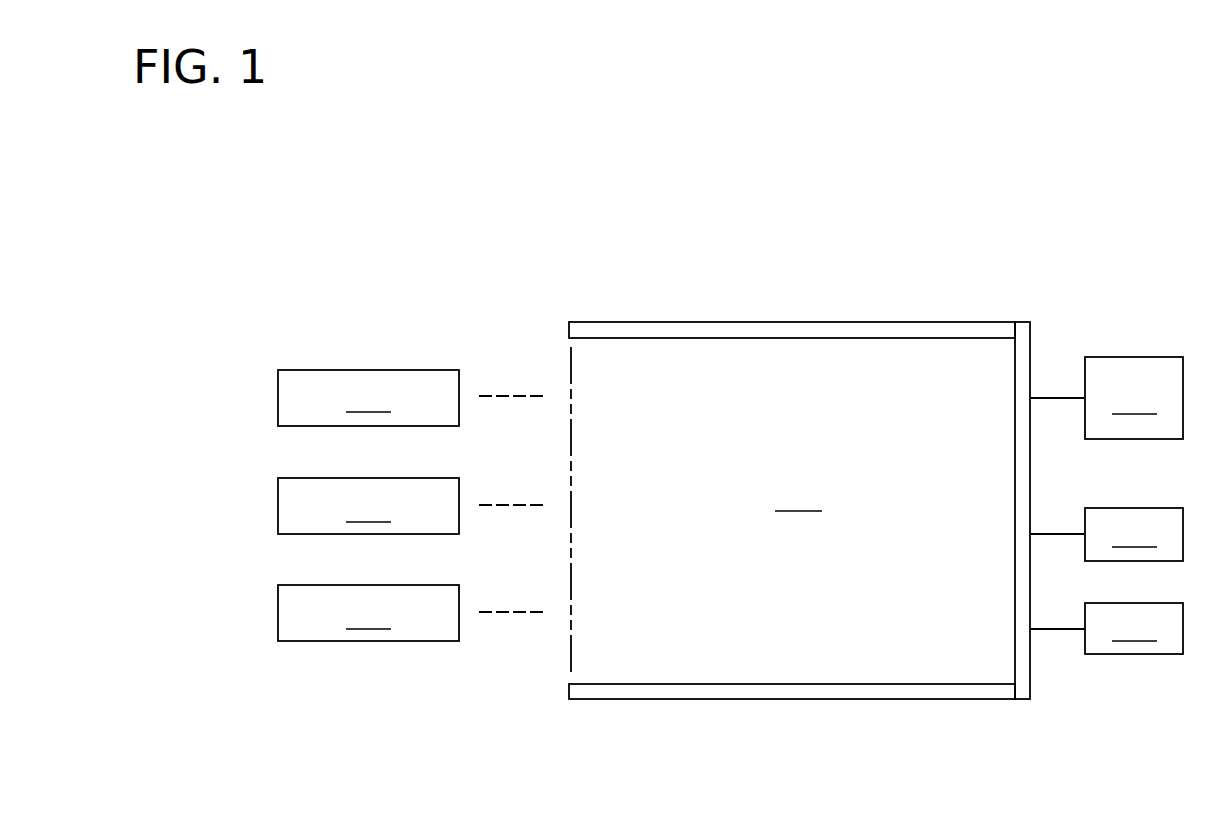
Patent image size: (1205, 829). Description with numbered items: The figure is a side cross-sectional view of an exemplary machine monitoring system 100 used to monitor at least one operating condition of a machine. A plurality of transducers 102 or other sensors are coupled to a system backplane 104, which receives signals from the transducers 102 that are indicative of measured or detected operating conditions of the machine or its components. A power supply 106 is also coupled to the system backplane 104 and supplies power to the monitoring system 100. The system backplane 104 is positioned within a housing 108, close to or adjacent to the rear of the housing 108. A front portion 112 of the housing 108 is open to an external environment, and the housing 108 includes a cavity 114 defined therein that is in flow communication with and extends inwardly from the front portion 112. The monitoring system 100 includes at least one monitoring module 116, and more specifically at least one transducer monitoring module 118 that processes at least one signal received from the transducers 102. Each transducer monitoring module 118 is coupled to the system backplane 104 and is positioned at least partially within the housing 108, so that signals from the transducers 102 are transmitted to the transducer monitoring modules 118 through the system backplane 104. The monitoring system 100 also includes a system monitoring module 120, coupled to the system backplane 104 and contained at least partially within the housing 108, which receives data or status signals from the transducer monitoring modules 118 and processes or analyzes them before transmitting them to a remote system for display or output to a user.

The machine monitoring system 100 is at (545, 212).
The transducer 102 is at (1106, 581).
The system backplane 104 is at (1031, 340).
The power supply 106 is at (1106, 398).
The housing 108 is at (777, 308).
The front portion 112 is at (533, 358).
The cavity 114 is at (798, 496).
The monitoring module 116 is at (215, 362).
The transducer monitoring module 118 is at (410, 559).
The system monitoring module 120 is at (410, 398).